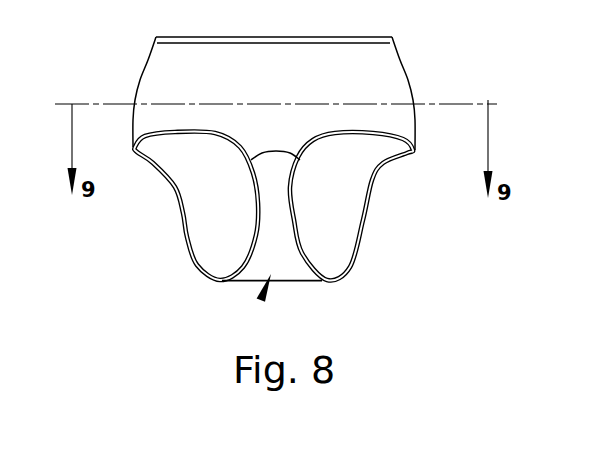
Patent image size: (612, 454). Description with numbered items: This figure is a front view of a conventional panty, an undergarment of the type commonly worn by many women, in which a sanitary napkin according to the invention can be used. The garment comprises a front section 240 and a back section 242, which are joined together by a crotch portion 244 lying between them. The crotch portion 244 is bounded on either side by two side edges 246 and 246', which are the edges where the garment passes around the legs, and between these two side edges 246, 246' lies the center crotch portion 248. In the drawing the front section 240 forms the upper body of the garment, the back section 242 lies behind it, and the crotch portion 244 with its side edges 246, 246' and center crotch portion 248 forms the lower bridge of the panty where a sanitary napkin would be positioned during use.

The front section 240 is at (163, 89).
The back section 242 is at (277, 218).
The crotch portion 244 is at (262, 297).
The side edge 246 is at (175, 218).
The side edge 246' is at (370, 206).
The center crotch portion 248 is at (277, 240).